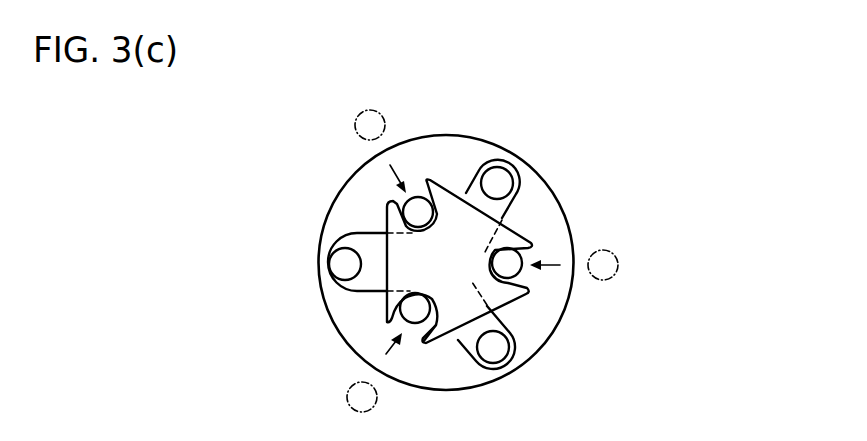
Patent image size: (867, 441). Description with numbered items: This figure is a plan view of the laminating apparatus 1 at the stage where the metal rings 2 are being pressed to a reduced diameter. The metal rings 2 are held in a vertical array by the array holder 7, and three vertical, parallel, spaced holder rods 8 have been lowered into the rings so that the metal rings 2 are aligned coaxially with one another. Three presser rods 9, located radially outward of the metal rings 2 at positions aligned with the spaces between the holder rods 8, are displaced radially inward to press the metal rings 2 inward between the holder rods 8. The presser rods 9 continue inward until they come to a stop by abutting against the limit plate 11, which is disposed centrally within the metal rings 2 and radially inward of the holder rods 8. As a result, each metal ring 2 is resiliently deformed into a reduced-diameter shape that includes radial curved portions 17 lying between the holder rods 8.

The laminating apparatus 1 is at (664, 128).
The metal ring 2 is at (552, 186).
The array holder 7 is at (515, 146).
The holder rods 8 is at (500, 182).
The presser rods 9 is at (383, 120).
The limit plate 11 is at (460, 297).
The radial curved portions 17 is at (484, 162).